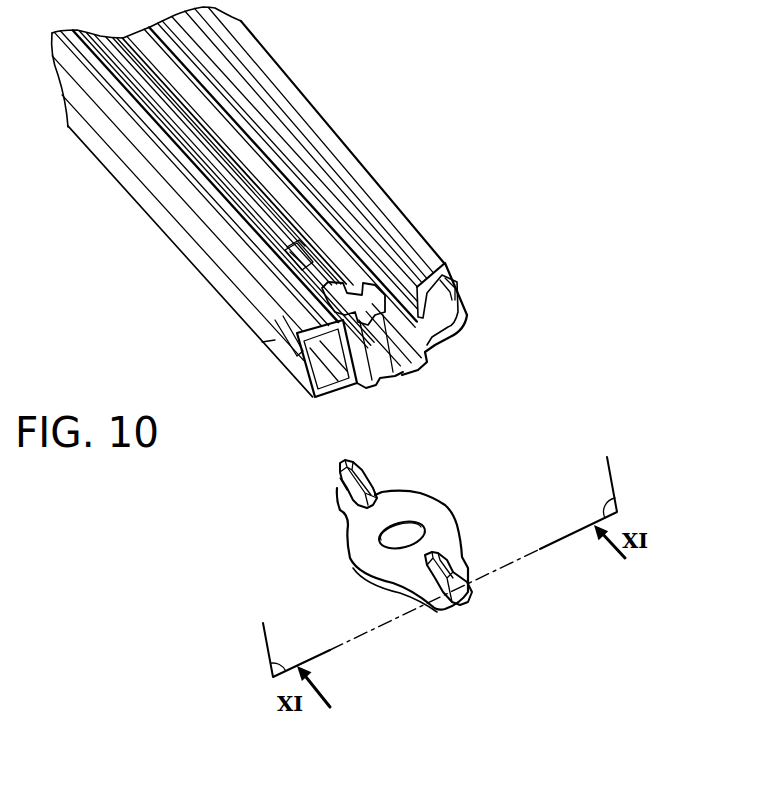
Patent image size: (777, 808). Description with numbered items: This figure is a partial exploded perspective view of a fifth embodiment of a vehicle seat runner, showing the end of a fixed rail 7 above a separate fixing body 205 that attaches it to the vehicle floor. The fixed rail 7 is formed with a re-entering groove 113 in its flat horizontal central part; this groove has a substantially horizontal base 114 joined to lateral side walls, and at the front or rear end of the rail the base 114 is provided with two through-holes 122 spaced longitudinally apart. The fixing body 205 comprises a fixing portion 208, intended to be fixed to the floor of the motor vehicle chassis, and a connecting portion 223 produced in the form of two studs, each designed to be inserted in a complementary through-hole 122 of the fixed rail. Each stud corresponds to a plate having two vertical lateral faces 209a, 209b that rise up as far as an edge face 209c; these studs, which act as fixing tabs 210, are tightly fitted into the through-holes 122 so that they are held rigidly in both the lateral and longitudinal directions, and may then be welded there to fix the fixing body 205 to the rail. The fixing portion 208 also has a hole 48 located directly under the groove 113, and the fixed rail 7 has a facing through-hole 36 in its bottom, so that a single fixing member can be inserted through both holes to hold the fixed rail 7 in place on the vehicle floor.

The fixed rail 7 is at (428, 129).
The through-hole 36 is at (347, 310).
The groove 113 is at (400, 380).
The base 114 is at (278, 238).
The through-hole 122 is at (382, 330).
The fixing body 205 is at (480, 502).
The fixing portion 208 is at (340, 569).
The hole 48 is at (391, 549).
The vertical lateral face 209a is at (340, 467).
The vertical lateral face 209b is at (374, 494).
The edge face 209c is at (350, 458).
The fixing tab 210 is at (358, 472).
The connecting portion 223 is at (342, 485).